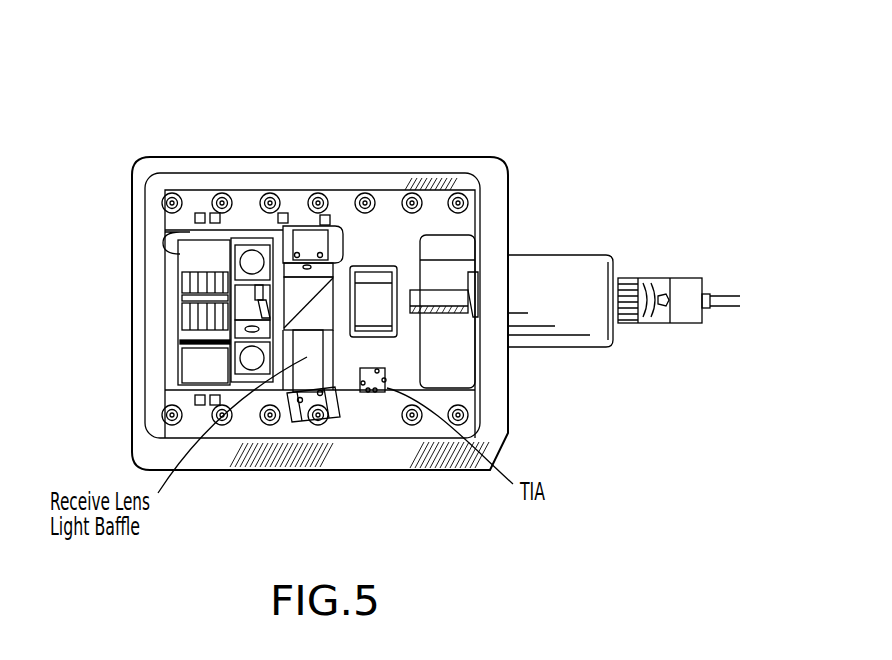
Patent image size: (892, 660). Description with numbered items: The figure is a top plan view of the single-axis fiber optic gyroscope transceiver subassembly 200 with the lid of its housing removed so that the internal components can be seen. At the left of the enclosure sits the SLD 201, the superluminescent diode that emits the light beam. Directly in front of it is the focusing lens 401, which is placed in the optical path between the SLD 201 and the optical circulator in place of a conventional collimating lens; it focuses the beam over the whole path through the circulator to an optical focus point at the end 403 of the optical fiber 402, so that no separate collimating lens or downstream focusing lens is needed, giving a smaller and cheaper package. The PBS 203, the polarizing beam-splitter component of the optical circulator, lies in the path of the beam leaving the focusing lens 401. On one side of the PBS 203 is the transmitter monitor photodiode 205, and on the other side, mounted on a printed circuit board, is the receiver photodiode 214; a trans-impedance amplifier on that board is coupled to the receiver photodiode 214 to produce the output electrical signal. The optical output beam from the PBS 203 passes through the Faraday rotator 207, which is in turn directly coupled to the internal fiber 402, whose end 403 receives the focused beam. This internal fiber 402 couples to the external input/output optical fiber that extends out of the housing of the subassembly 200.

The FOG transceiver subassembly 200 is at (443, 157).
The SLD 201 is at (176, 307).
The PBS 203 is at (302, 312).
The transmitter monitor photodiode 205 is at (305, 243).
The Faraday rotator 207 is at (380, 293).
The receiver photodiode 214 is at (310, 400).
The focusing lens 401 is at (238, 288).
The optical fiber 402 is at (448, 302).
The end of the optical fiber 403 is at (410, 301).